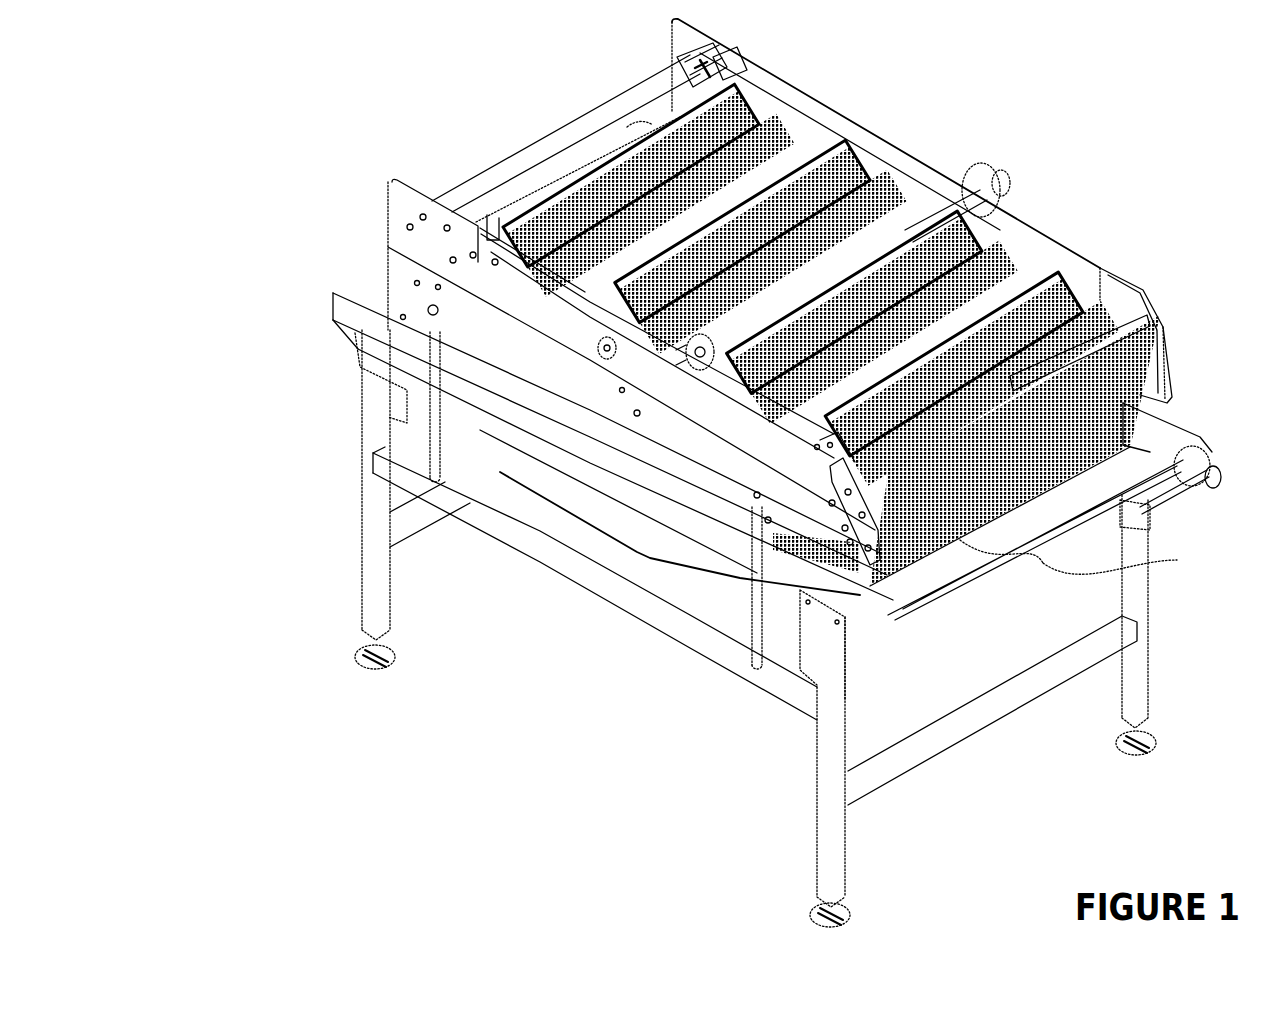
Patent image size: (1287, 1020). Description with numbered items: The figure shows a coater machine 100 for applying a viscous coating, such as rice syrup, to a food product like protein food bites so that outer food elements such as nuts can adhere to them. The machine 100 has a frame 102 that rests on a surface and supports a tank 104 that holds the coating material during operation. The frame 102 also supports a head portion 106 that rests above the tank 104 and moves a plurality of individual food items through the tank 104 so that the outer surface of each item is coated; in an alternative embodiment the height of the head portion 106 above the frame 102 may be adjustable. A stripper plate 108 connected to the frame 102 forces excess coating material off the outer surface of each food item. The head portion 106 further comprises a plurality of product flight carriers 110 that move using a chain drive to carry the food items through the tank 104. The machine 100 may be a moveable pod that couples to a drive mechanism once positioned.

The coater machine 100 is at (300, 198).
The frame 102 is at (362, 505).
The tank 104 is at (647, 557).
The head portion 106 is at (1128, 273).
The stripper plate 108 is at (1033, 540).
The product flight carriers 110 is at (843, 147).